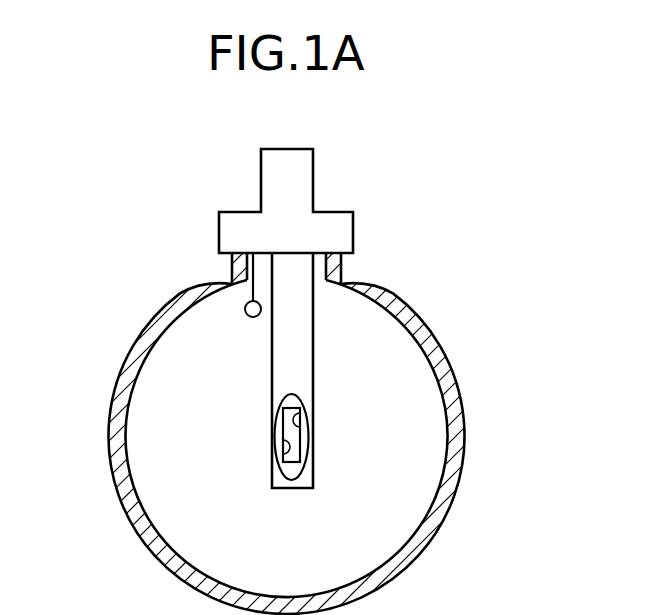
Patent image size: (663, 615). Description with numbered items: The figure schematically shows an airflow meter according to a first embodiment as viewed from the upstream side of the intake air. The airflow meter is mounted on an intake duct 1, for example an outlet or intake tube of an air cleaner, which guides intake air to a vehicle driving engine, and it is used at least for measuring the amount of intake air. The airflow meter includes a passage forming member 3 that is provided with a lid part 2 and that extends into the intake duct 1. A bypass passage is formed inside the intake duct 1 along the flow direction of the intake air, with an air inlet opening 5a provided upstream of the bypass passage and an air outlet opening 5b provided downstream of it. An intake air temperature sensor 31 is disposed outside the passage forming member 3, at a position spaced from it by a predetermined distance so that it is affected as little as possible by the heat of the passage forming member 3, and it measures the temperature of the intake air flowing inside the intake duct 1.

The intake duct 1 is at (163, 300).
The lid part 2 is at (237, 222).
The passage forming member 3 is at (305, 322).
The intake air temperature sensor 31 is at (251, 318).
The air inlet opening 5a is at (282, 459).
The air outlet opening 5b is at (302, 413).